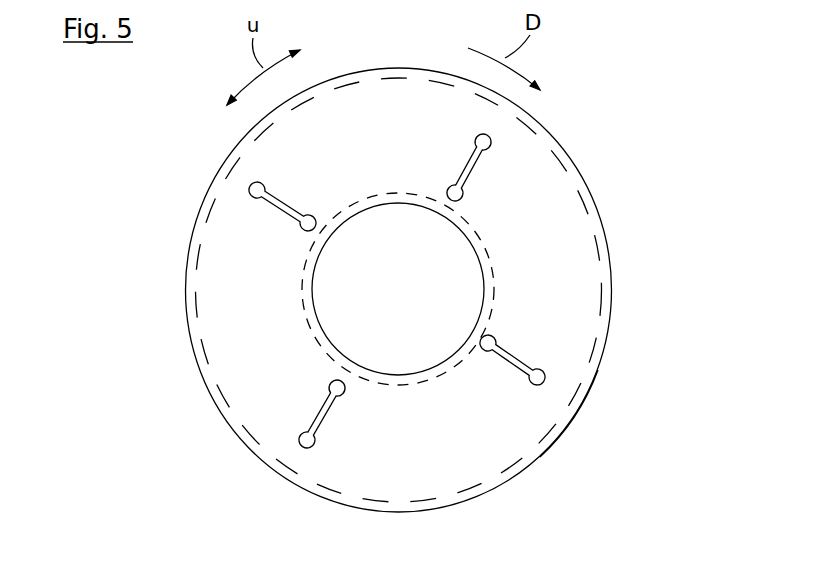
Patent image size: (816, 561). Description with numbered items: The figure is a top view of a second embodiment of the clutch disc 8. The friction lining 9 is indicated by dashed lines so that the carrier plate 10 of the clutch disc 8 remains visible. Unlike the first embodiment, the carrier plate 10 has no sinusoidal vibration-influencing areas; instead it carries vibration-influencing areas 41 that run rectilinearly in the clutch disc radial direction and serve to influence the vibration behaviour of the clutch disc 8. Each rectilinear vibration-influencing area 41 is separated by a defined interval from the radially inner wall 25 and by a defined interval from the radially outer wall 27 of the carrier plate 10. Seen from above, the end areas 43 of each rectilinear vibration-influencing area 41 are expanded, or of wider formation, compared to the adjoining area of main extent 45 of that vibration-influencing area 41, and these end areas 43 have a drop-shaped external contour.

The clutch disc 8 is at (622, 122).
The friction lining 9 is at (596, 357).
The carrier plate 10 is at (598, 236).
The radially inner wall 25 is at (395, 373).
The radially outer wall 27 is at (548, 445).
The vibration-influencing area 41 is at (273, 215).
The end area 43 is at (257, 183).
The area of main extent 45 is at (293, 207).